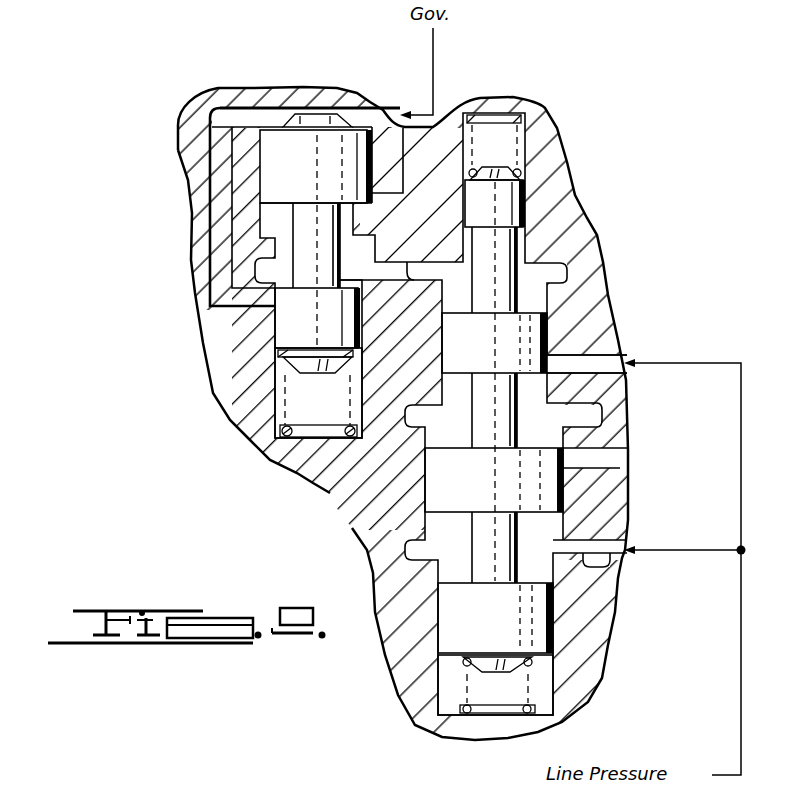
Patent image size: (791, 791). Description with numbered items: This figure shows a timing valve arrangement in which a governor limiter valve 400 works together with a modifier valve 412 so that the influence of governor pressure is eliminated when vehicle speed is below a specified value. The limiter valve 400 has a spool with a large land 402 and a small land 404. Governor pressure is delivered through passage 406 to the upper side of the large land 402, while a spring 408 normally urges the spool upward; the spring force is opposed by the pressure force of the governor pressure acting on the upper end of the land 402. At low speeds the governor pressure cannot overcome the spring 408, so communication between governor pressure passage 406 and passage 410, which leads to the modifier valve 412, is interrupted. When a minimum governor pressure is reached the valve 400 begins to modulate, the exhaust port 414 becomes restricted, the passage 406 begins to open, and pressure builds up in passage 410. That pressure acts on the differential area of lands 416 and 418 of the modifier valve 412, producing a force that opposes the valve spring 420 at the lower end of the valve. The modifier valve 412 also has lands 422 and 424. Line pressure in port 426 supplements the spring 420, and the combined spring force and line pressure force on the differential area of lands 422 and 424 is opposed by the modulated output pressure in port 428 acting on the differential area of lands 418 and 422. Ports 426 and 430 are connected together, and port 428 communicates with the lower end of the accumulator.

The governor limiter valve 400 is at (286, 220).
The large land 402 is at (268, 167).
The small land 404 is at (285, 330).
The governor pressure passage 406 is at (372, 106).
The spring 408 is at (280, 423).
The passage 410 is at (423, 263).
The modifier valve 412 is at (532, 400).
The exhaust port 414 is at (388, 192).
The land 416 is at (525, 197).
The land 418 is at (548, 333).
The valve spring 420 is at (538, 703).
The land 422 is at (424, 497).
The land 424 is at (553, 630).
The line pressure port 426 is at (600, 565).
The modulated output pressure port 428 is at (441, 353).
The port 430 is at (614, 353).